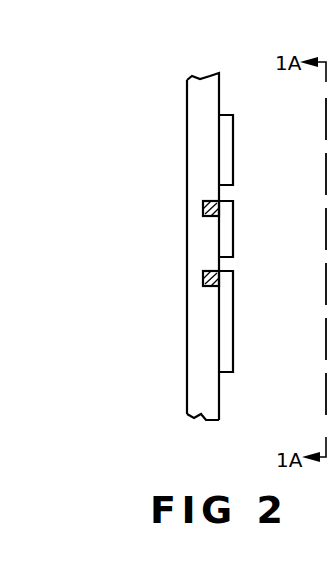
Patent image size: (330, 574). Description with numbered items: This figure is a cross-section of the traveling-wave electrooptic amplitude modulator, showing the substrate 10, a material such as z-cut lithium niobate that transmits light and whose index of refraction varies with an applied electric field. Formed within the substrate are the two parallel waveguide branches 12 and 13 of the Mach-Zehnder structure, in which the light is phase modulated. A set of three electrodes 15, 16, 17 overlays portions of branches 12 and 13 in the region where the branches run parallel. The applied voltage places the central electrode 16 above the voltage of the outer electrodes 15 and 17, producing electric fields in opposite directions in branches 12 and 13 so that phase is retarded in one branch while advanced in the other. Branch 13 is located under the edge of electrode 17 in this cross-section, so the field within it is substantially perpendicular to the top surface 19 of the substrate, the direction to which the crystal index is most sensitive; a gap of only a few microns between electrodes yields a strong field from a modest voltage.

The substrate 10 is at (200, 103).
The branch 12 is at (210, 200).
The branch 13 is at (203, 283).
The electrode 15 is at (232, 147).
The electrode 16 is at (225, 228).
The electrode 17 is at (230, 344).
The top surface 19 is at (210, 391).